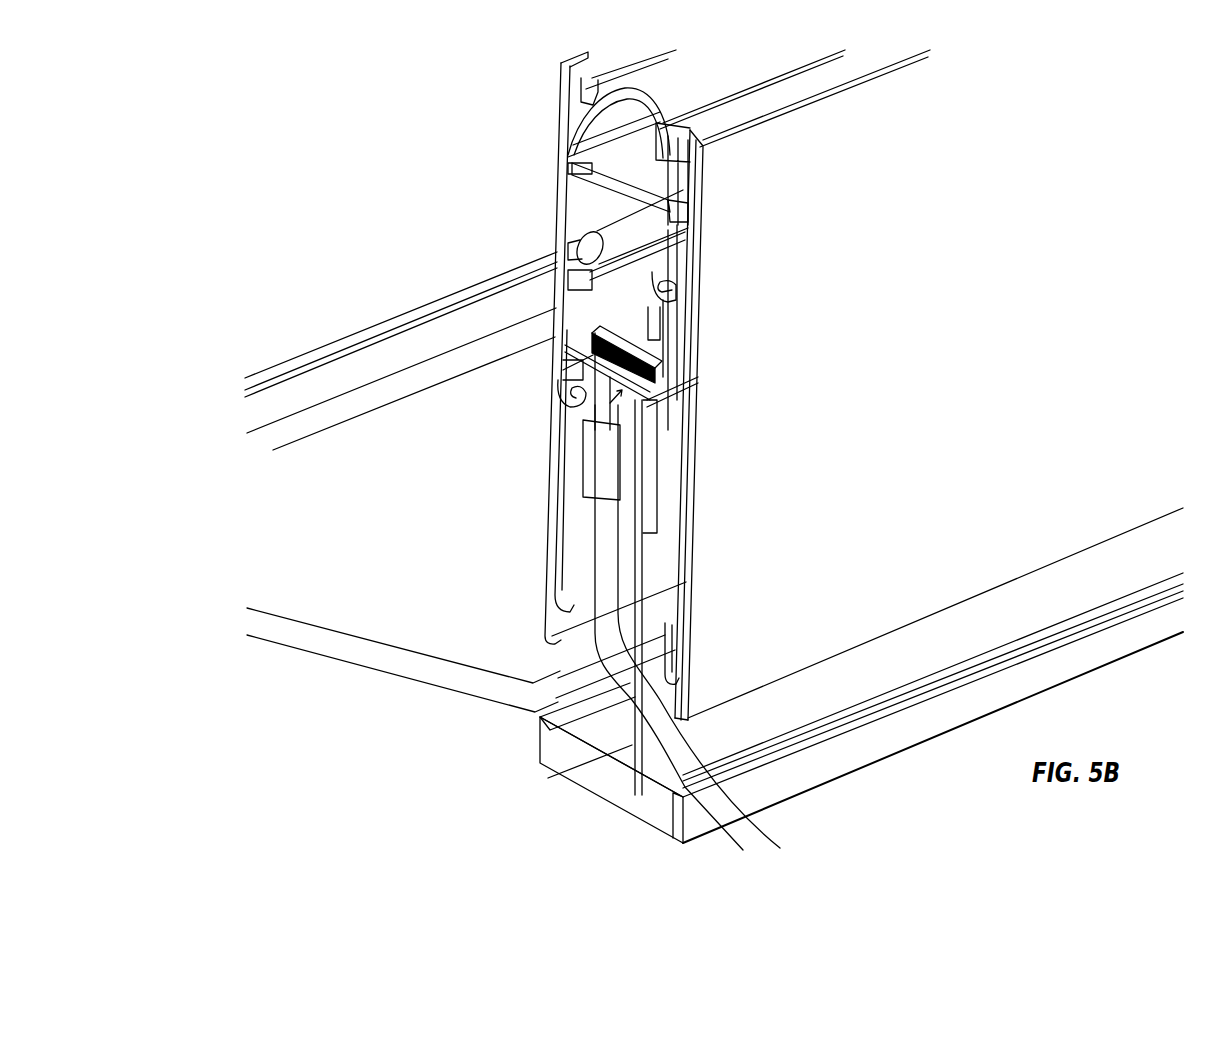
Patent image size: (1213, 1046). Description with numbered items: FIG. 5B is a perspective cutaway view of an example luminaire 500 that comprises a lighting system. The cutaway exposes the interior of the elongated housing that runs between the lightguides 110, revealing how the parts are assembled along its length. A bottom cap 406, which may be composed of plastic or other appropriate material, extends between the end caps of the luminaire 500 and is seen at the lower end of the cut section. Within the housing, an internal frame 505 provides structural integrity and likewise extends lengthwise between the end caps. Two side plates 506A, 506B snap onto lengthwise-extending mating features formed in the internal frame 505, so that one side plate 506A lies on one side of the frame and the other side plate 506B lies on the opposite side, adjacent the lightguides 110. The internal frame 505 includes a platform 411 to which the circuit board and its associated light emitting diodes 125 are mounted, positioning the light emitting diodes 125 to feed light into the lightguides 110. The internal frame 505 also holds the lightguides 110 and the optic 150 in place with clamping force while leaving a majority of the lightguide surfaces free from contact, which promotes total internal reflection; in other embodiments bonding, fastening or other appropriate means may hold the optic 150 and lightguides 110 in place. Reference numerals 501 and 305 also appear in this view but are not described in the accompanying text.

The luminaire 500 is at (410, 104).
The lightguides 110 is at (376, 571).
The side plate 506A is at (822, 206).
The side plate 506B is at (557, 192).
The top rail 501 is at (706, 137).
The housing 305 is at (561, 64).
The platform 411 is at (702, 337).
The light emitting diodes 125 is at (703, 360).
The internal frame 505 is at (612, 468).
The bottom cap 406 is at (590, 790).
The optic 150 is at (563, 417).